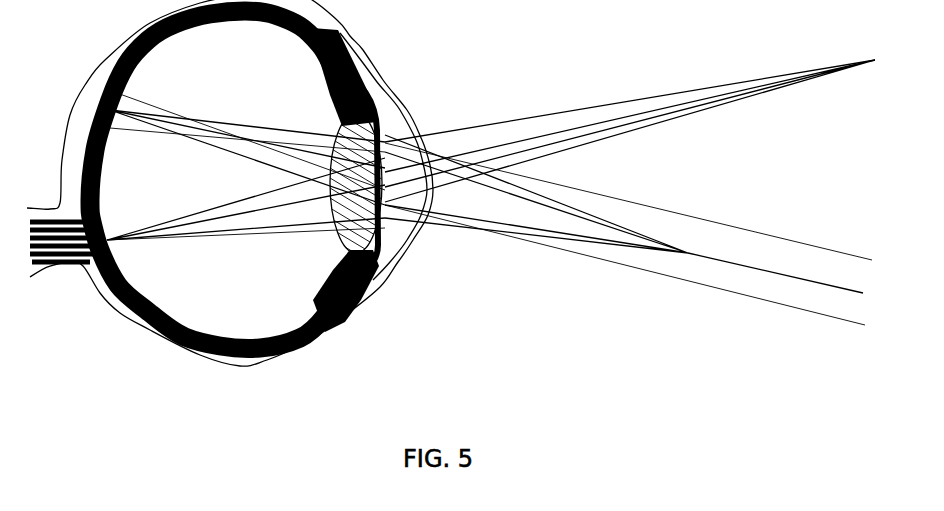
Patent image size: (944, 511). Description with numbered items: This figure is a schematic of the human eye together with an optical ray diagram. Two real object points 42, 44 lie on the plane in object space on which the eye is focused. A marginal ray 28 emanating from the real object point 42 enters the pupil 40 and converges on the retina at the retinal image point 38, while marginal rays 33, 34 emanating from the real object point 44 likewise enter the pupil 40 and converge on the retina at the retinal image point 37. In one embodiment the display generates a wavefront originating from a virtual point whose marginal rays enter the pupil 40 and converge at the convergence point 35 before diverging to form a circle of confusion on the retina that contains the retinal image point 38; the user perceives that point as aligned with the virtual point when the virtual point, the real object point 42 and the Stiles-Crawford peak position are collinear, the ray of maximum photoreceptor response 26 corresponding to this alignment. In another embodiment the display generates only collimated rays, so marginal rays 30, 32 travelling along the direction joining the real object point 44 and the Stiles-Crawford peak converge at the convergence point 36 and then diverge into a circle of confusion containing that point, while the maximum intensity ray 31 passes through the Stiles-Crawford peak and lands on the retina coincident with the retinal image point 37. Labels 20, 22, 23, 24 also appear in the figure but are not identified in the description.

The light ray 20 is at (597, 137).
The focal point 22 is at (872, 67).
The light ray 23 is at (748, 110).
The light ray 24 is at (690, 73).
The ray of maximum photoreceptor response 26 is at (783, 73).
The marginal ray 28 is at (558, 113).
The marginal ray 30 is at (750, 230).
The maximum intensity ray 31 is at (748, 270).
The marginal ray 32 is at (493, 227).
The marginal ray 33 is at (595, 263).
The marginal ray 34 is at (643, 227).
The convergence point 35 is at (172, 238).
The convergence point 36 is at (203, 120).
The retinal image point 37 is at (127, 130).
The retinal image point 38 is at (110, 233).
The pupil 40 is at (380, 213).
The real object point 42 is at (398, 108).
The real object point 44 is at (697, 120).